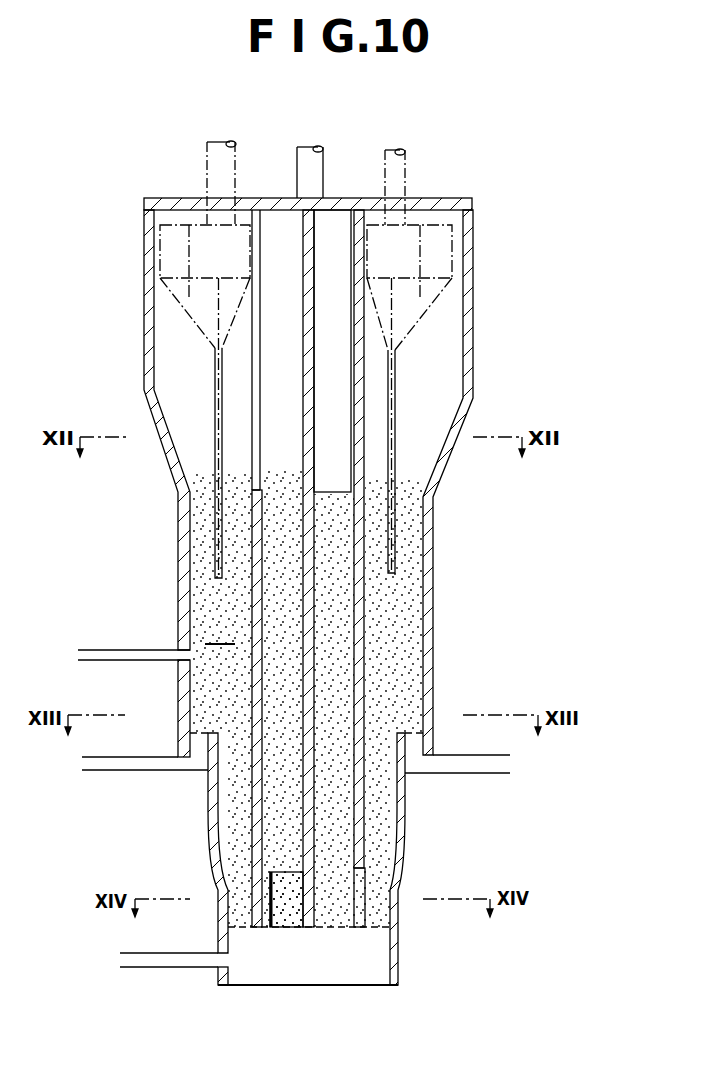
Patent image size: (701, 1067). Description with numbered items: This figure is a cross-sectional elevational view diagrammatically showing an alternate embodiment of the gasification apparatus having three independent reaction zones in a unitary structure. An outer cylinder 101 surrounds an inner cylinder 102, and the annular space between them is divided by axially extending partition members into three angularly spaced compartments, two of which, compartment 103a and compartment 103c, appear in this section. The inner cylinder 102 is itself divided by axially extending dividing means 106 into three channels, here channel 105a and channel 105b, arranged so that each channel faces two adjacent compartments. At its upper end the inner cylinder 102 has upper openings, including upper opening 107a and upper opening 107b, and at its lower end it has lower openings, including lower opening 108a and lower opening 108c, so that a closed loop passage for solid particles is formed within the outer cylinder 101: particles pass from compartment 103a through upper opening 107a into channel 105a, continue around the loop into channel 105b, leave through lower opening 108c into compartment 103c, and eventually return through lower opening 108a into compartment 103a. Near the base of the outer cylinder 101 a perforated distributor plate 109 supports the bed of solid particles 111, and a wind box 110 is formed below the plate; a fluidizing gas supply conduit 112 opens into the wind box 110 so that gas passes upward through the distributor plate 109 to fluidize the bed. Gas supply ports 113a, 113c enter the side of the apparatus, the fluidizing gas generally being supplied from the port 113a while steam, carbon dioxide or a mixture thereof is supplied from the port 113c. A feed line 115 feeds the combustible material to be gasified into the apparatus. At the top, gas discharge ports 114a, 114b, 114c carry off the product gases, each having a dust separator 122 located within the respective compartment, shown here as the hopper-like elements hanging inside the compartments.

The outer cylinder 101 is at (436, 529).
The inner cylinder 102 is at (364, 578).
The compartment 103a is at (216, 677).
The compartment 103c is at (390, 647).
The channel 105a is at (272, 552).
The channel 105b is at (350, 698).
The dividing means 106 is at (311, 622).
The upper opening 107a is at (258, 238).
The upper opening 107b is at (345, 268).
The lower opening 108a is at (290, 908).
The lower opening 108c is at (360, 880).
The perforated distributor plate 109 is at (376, 930).
The wind box 110 is at (250, 955).
The bed of solid particles 111 is at (220, 632).
The fluidizing gas supply conduit 112 is at (178, 968).
The gas supply port 113a is at (141, 771).
The gas supply port 113c is at (459, 774).
The gas discharge port 114a is at (220, 163).
The gas discharge port 114b is at (305, 163).
The gas discharge port 114c is at (395, 167).
The feed line 115 is at (148, 650).
The hopper 122 is at (190, 290).